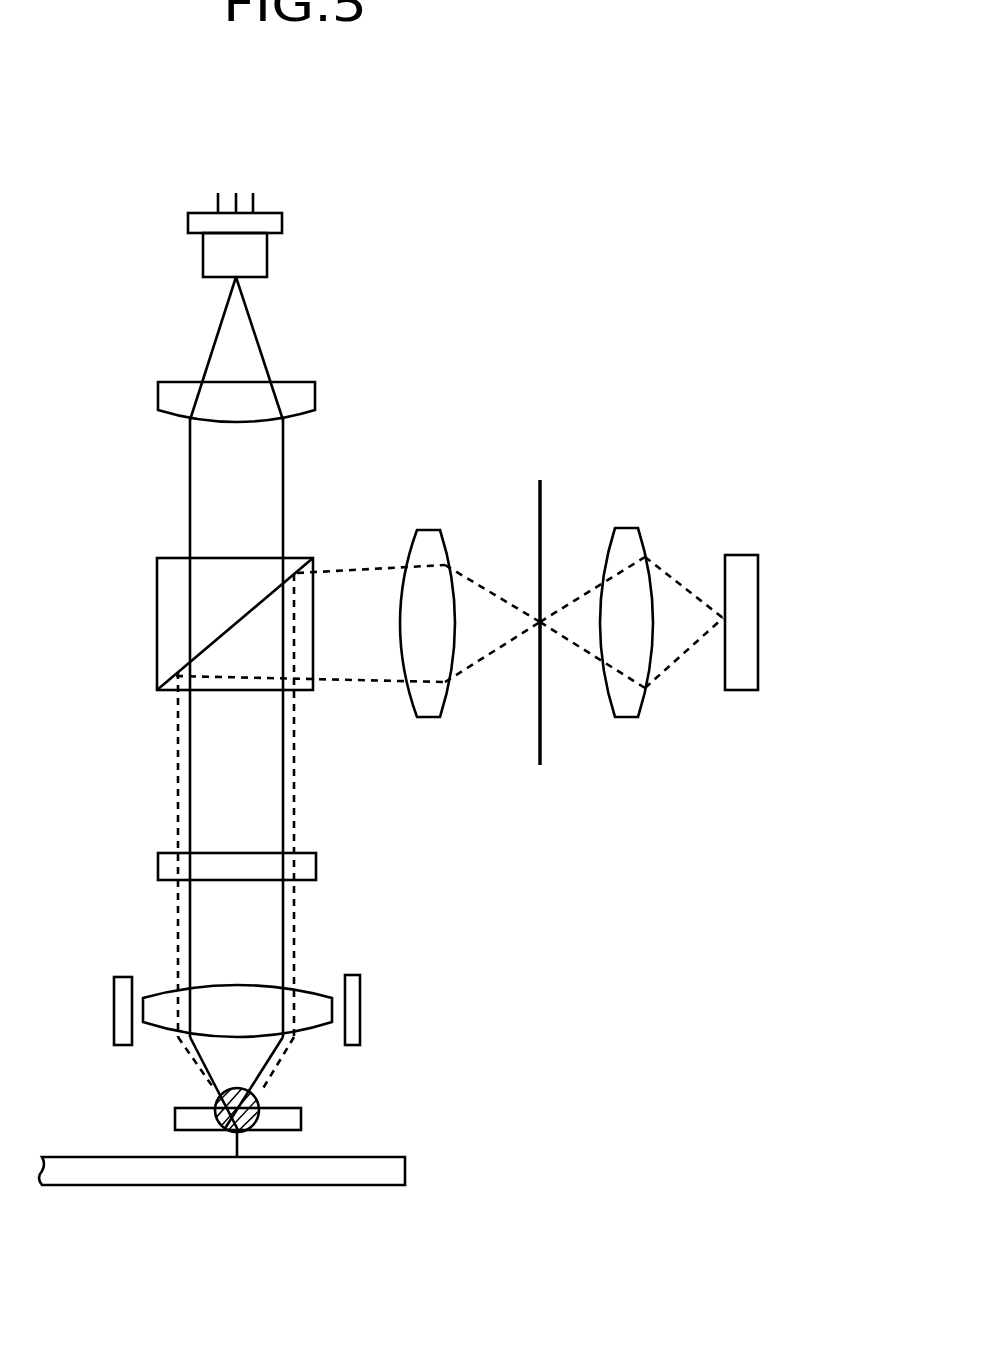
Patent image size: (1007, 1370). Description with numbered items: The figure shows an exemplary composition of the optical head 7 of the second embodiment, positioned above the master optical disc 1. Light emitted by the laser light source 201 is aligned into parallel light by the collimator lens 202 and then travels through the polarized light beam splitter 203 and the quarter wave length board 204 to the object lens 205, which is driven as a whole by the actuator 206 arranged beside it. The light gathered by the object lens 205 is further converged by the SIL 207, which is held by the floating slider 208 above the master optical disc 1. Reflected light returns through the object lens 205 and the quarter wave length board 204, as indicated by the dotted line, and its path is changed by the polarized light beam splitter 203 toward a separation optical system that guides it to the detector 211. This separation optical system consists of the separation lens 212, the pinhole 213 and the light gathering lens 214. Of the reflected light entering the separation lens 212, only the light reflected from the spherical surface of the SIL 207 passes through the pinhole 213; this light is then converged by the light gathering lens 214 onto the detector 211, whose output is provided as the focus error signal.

The master optical disc 1 is at (357, 1172).
The optical head 7 is at (567, 450).
The laser light source 201 is at (262, 258).
The collimator lens 202 is at (303, 394).
The polarized light beam splitter 203 is at (157, 612).
The quarter wave length board 204 is at (167, 868).
The object lens 205 is at (310, 1025).
The actuator 206 is at (355, 997).
The SIL 207 is at (230, 1133).
The floating slider 208 is at (301, 1121).
The detector 211 is at (738, 570).
The separation lens 212 is at (428, 532).
The pinhole 213 is at (541, 733).
The light gathering lens 214 is at (622, 535).